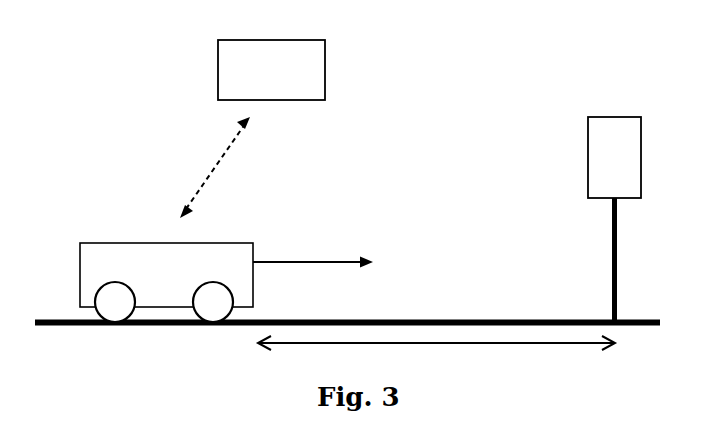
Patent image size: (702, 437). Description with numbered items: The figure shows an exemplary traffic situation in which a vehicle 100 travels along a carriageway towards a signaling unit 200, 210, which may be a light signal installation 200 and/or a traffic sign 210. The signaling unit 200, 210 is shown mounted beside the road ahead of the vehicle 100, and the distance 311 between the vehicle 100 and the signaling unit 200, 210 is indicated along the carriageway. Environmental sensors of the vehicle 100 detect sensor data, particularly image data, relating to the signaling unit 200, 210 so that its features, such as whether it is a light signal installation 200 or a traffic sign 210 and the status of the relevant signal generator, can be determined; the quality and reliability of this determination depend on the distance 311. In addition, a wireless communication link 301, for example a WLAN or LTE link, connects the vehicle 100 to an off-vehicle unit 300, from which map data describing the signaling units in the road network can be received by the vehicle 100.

The vehicle 100 is at (87, 278).
The off-vehicle unit 300 is at (222, 76).
The wireless communication link 301 is at (215, 171).
The light signal installation 200 is at (550, 218).
The traffic sign 210 is at (592, 163).
The distance 311 is at (340, 346).